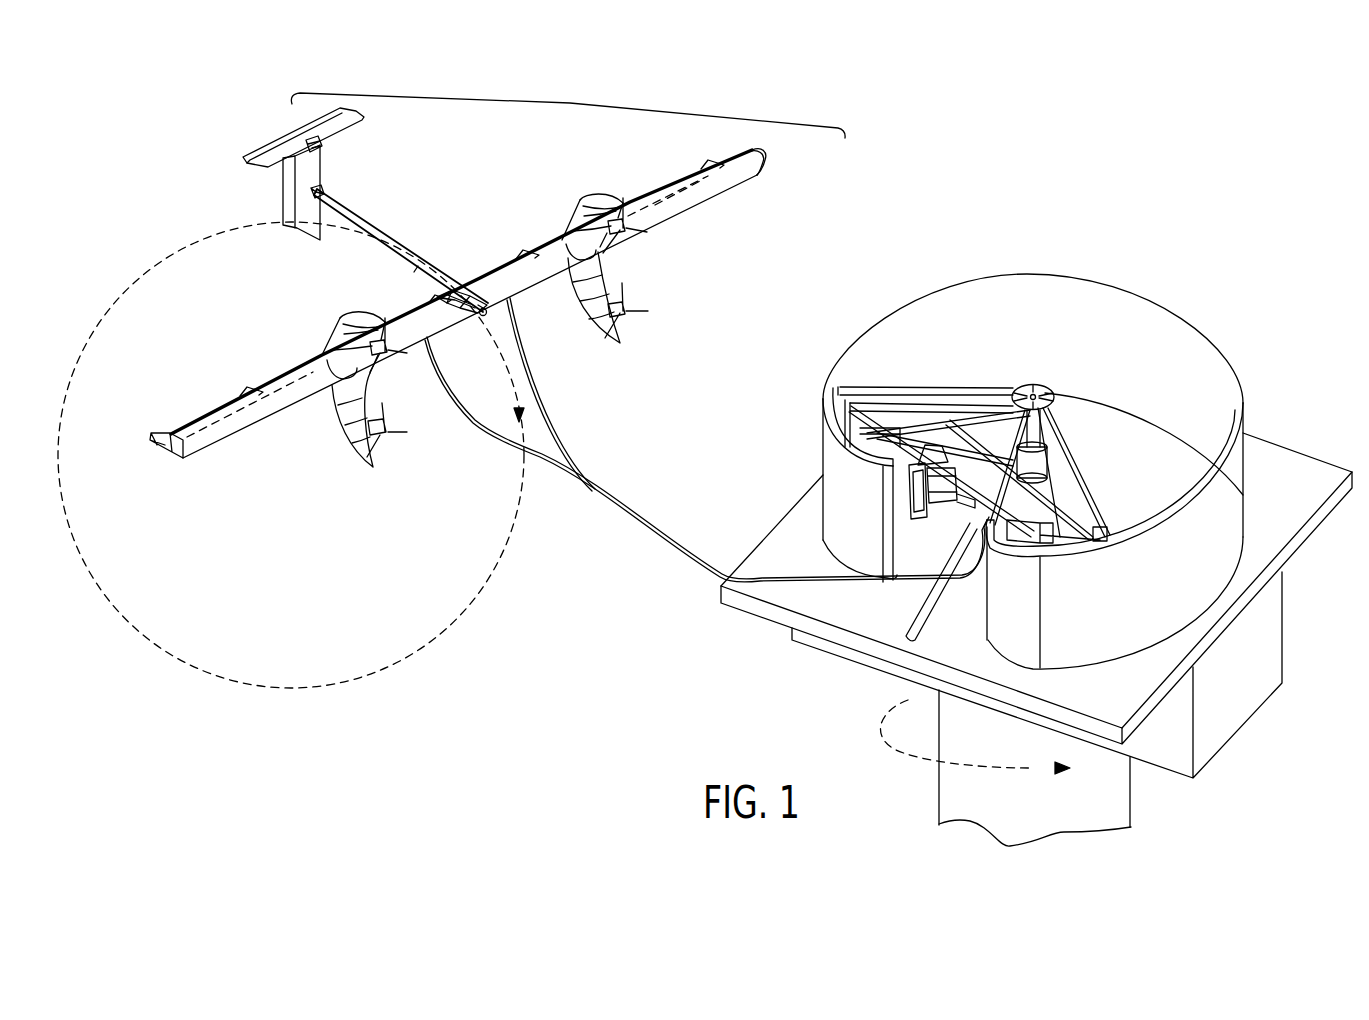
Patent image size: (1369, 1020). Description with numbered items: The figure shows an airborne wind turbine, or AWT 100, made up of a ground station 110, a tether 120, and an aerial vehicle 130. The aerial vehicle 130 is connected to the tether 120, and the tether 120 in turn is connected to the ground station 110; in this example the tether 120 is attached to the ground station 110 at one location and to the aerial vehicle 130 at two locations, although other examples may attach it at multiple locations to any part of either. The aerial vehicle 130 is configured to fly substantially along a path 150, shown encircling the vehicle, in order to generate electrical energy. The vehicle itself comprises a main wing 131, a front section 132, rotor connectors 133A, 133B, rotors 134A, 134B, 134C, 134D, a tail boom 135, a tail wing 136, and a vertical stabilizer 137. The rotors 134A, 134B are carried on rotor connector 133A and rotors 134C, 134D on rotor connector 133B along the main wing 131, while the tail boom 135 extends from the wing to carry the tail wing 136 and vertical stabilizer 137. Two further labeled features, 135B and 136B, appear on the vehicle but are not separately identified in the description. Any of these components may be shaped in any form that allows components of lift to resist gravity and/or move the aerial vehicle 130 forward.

The airborne wind turbine 100 is at (170, 193).
The ground station 110 is at (874, 296).
The tether 120 is at (696, 568).
The aerial vehicle 130 is at (568, 100).
The main wing 131 is at (520, 282).
The front section 132 is at (483, 317).
The rotor connector 133A is at (580, 201).
The rotor connector 133B is at (338, 324).
The rotor 134A is at (637, 249).
The rotor 134B is at (635, 329).
The rotor 134C is at (390, 367).
The rotor 134D is at (387, 451).
The tail boom 135 is at (373, 233).
The wing spar 135B is at (663, 192).
The tail wing 136 is at (354, 109).
The wing tip 136B is at (757, 152).
The vertical stabilizer 137 is at (288, 188).
The path 150 is at (112, 304).